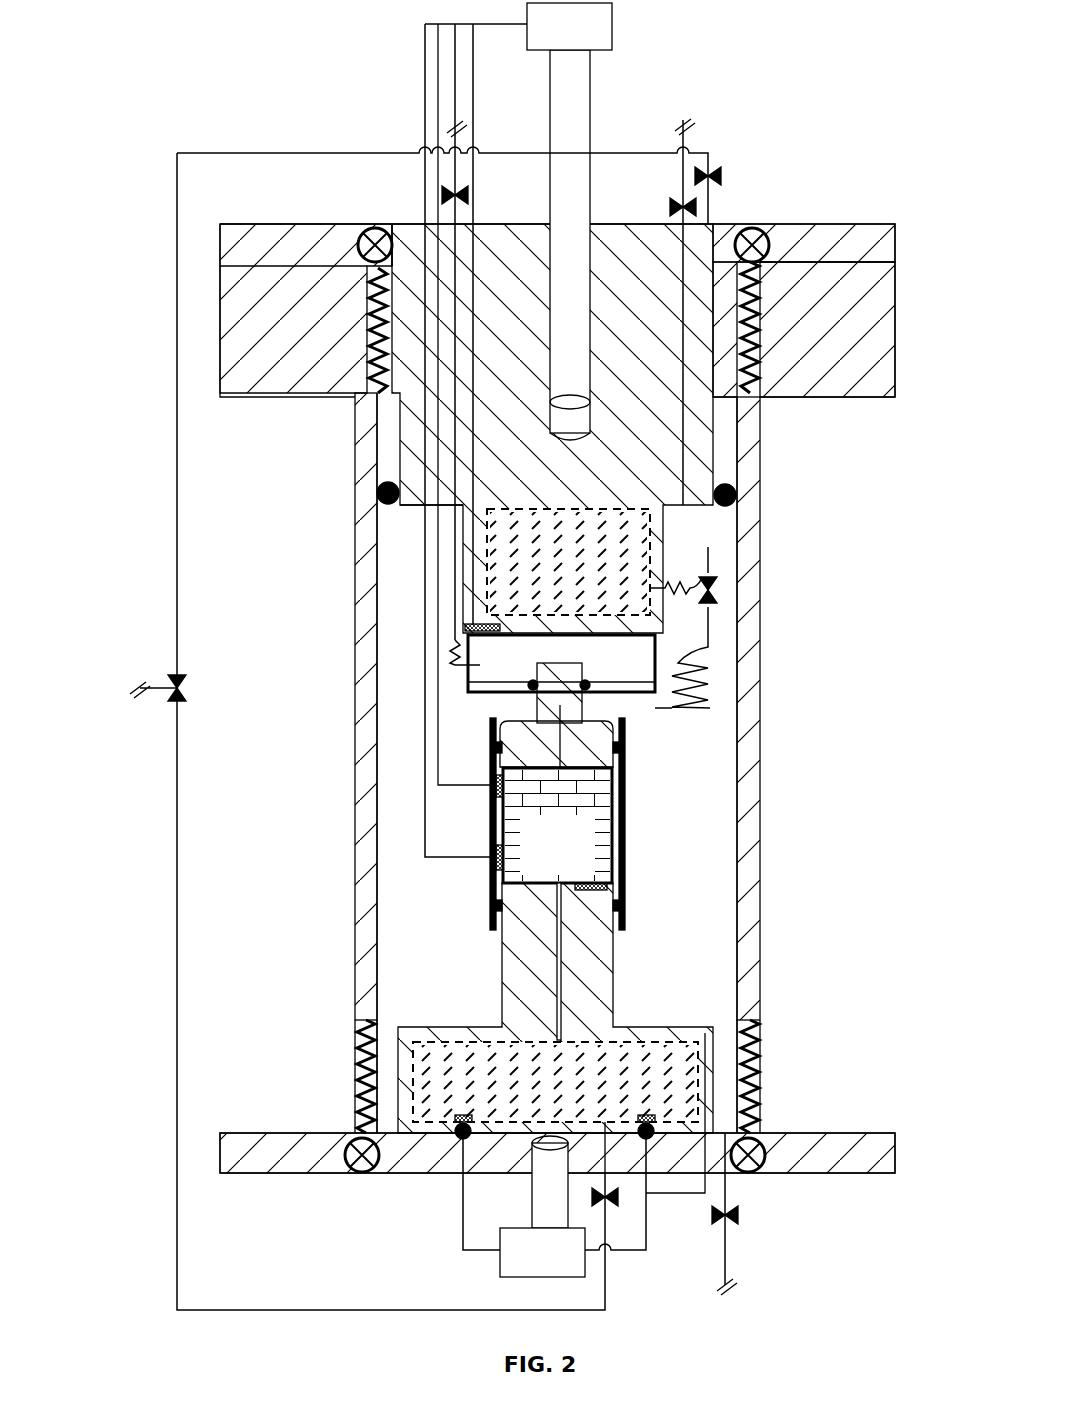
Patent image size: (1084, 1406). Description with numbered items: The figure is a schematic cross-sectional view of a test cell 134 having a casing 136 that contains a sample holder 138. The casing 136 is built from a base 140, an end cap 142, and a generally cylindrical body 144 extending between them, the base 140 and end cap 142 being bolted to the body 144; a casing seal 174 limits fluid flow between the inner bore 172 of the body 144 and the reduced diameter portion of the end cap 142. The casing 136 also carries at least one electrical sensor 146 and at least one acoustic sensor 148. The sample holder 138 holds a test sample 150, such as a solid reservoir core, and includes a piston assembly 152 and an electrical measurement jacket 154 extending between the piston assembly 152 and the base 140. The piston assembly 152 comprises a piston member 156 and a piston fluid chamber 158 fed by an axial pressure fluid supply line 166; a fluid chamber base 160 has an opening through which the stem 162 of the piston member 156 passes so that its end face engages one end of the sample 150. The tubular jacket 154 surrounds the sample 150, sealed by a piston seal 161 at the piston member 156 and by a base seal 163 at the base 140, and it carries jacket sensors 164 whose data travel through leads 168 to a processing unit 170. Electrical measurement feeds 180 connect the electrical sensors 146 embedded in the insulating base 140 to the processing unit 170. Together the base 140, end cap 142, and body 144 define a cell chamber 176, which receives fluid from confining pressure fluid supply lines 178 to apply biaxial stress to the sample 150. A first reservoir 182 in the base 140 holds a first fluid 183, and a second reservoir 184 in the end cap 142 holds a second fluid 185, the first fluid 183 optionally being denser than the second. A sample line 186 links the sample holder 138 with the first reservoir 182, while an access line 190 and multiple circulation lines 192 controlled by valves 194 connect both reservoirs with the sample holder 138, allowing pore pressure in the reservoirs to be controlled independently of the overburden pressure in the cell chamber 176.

The test cell 134 is at (515, 635).
The casing 136 is at (262, 1107).
The sample holder 138 is at (492, 824).
The base 140 is at (895, 1155).
The end cap 142 is at (895, 237).
The body 144 is at (760, 842).
The electrical sensor 146 is at (465, 628).
The acoustic sensor 148 is at (587, 425).
The test sample 150 is at (535, 858).
The piston assembly 152 is at (474, 723).
The electrical measurement jacket 154 is at (625, 830).
The piston member 156 is at (622, 742).
The piston fluid chamber 158 is at (468, 668).
The fluid chamber base 160 is at (468, 690).
The piston seal 161 is at (490, 750).
The stem 162 is at (565, 668).
The base seal 163 is at (493, 905).
The jacket sensors 164 is at (493, 862).
The axial pressure fluid supply line 166 is at (427, 143).
The leads 168 is at (425, 93).
The processing unit 170 is at (550, 40).
The inner bore 172 is at (378, 982).
The casing seal 174 is at (377, 494).
The cell chamber 176 is at (635, 975).
The confining pressure fluid supply lines 178 is at (683, 130).
The electrical measurement feeds 180 is at (449, 131).
The first reservoir 182 is at (412, 1068).
The first fluid 183 is at (525, 1095).
The second reservoir 184 is at (473, 562).
The second fluid 185 is at (550, 570).
The sample line 186 is at (562, 950).
The access line 190 is at (177, 735).
The circulation lines 192 is at (177, 430).
The valves 194 is at (709, 165).